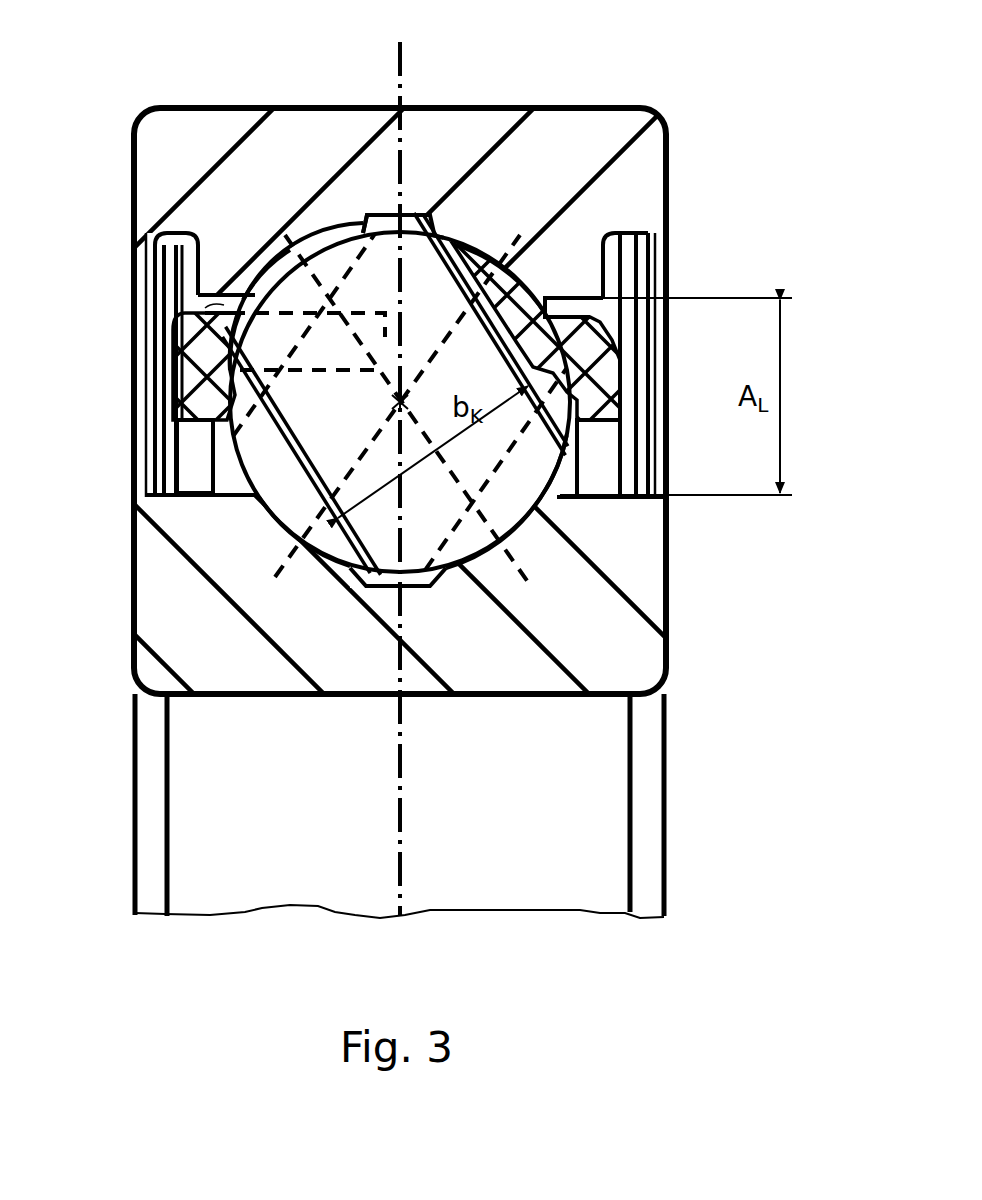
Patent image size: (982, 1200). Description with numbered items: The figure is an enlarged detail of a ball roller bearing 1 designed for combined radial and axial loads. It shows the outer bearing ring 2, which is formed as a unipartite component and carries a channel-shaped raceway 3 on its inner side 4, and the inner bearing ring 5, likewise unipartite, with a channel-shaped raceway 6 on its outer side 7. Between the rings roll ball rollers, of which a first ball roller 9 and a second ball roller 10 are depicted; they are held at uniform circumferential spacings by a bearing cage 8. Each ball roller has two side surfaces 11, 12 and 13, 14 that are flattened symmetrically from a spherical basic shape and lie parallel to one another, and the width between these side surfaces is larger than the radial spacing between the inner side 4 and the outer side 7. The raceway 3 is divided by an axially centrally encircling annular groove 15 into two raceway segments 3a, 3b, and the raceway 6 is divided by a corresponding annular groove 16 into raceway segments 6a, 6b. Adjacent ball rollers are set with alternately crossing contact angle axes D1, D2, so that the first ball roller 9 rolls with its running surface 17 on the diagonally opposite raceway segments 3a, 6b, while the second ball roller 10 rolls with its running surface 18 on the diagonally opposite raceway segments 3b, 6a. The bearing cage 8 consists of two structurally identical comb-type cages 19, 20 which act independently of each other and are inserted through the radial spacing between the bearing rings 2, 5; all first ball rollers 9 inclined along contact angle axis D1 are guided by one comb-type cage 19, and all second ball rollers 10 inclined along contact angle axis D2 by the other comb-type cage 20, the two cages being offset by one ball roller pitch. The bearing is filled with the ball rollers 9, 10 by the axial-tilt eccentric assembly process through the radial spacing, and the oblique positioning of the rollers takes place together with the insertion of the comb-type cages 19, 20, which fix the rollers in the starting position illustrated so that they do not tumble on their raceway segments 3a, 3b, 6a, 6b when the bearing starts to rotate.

The ball roller bearing 1 is at (259, 96).
The outer bearing ring 2 is at (590, 158).
The channel-shaped raceway 3 is at (453, 222).
The raceway segment 3a is at (392, 210).
The raceway segment 3b is at (483, 250).
The inner side 4 is at (200, 298).
The inner bearing ring 5 is at (585, 632).
The channel-shaped raceway 6 is at (345, 574).
The raceway segment 6a is at (272, 548).
The raceway segment 6b is at (493, 557).
The outer side 7 is at (205, 478).
The bearing cage 8 is at (246, 290).
The first ball roller 9 is at (545, 508).
The second ball roller 10 is at (300, 503).
The side surface 11 is at (280, 453).
The side surface 12 is at (520, 240).
The side surface 13 is at (165, 402).
The side surface 14 is at (507, 450).
The annular groove 15 is at (398, 120).
The annular groove 16 is at (413, 588).
The running surface 17 is at (498, 493).
The running surface 18 is at (295, 525).
The comb-type cage 19 is at (185, 345).
The comb-type cage 20 is at (548, 340).
The contact angle axis D1 is at (286, 228).
The contact angle axis D2 is at (519, 222).